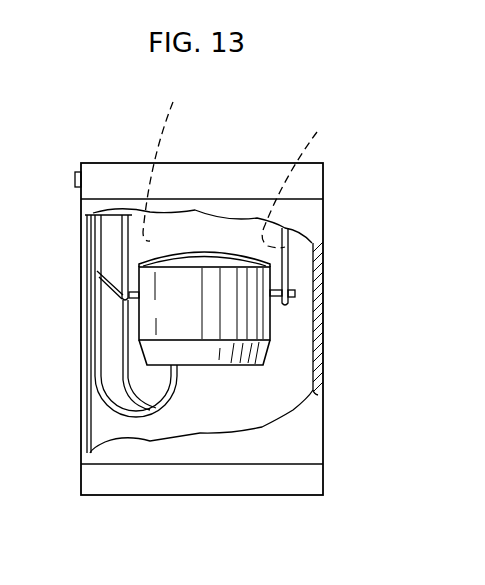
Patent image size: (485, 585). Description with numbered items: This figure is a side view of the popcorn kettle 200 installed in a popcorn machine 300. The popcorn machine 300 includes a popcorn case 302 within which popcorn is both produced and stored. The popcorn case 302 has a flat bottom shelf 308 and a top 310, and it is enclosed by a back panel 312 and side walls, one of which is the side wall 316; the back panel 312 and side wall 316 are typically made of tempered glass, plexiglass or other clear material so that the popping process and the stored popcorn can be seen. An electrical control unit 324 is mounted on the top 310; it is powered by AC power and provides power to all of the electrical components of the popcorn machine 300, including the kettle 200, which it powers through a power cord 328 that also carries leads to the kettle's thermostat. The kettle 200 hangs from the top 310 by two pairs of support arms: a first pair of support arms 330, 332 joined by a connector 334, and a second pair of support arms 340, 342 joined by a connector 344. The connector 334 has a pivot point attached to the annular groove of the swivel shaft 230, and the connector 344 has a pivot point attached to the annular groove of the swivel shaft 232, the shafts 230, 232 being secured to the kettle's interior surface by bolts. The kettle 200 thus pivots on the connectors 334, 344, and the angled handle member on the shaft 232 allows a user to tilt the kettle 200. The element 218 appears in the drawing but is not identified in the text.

The popcorn kettle 200 is at (273, 327).
The drum lid 218 is at (188, 257).
The swivel shaft 230 is at (117, 302).
The swivel shaft 232 is at (297, 292).
The popcorn machine 300 is at (263, 152).
The popcorn case 302 is at (290, 380).
The bottom shelf 308 is at (252, 464).
The top 310 is at (106, 163).
The back panel 312 is at (318, 264).
The side wall 316 is at (82, 265).
The electrical control unit 324 is at (75, 179).
The power cord 328 is at (97, 367).
The support arm 330 is at (174, 159).
The support arm 332 is at (113, 215).
The connector 334 is at (110, 402).
The support arm 340 is at (306, 181).
The support arm 342 is at (285, 228).
The connector 344 is at (318, 300).